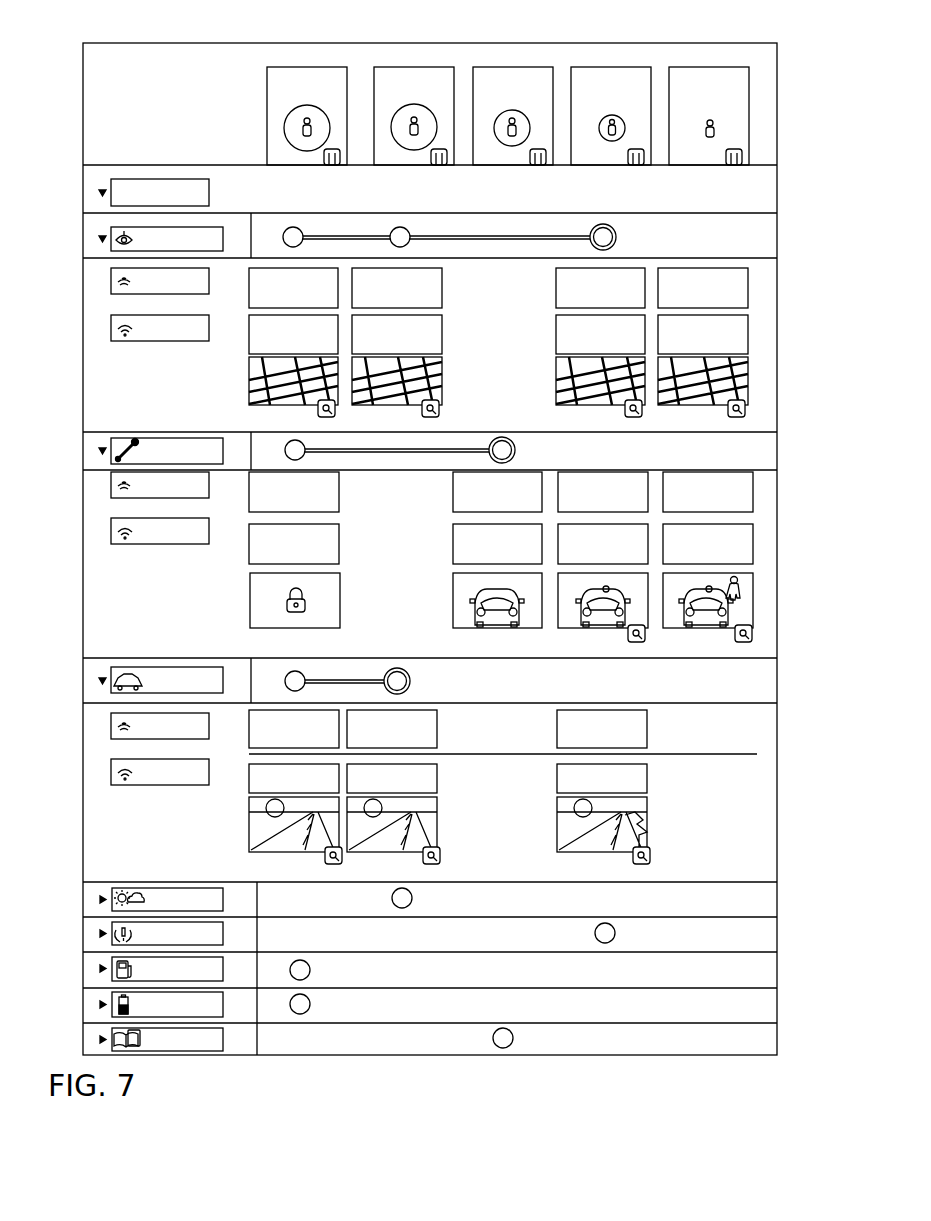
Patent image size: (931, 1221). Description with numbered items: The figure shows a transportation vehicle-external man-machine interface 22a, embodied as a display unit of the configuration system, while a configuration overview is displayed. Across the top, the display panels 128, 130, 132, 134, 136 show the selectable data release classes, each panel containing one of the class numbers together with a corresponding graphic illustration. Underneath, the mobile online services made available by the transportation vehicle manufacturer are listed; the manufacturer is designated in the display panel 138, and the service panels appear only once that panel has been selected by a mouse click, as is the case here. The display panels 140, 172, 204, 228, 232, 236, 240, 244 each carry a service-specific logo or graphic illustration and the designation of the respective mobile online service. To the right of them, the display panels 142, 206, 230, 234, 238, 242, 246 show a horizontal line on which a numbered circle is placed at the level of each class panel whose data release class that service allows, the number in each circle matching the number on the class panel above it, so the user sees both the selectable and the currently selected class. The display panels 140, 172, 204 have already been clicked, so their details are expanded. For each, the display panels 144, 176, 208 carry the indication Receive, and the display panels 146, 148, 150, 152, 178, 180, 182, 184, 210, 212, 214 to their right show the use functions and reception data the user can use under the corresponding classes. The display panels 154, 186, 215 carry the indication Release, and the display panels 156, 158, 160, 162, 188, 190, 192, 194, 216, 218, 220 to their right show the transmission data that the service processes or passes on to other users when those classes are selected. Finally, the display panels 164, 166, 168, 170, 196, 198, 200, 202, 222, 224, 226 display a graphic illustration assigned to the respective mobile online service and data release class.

The transportation vehicle-external man-machine interface 22a is at (777, 789).
The display panel 128 is at (308, 68).
The display panel 130 is at (414, 68).
The display panel 132 is at (510, 68).
The display panel 134 is at (611, 68).
The display panel 136 is at (710, 68).
The display panel 138 is at (154, 192).
The display panel 140 is at (161, 239).
The display panel 142 is at (757, 237).
The display panel 144 is at (160, 281).
The display panel 146 is at (293, 288).
The display panel 148 is at (397, 288).
The display panel 150 is at (600, 288).
The display panel 152 is at (703, 288).
The display panel 154 is at (160, 328).
The display panel 156 is at (293, 334).
The display panel 158 is at (397, 334).
The display panel 160 is at (600, 334).
The display panel 162 is at (703, 334).
The display panel 164 is at (282, 405).
The display panel 166 is at (385, 405).
The display panel 168 is at (590, 405).
The display panel 170 is at (693, 405).
The display panel 172 is at (307, 450).
The display panel 176 is at (160, 485).
The display panel 178 is at (294, 492).
The display panel 180 is at (497, 492).
The display panel 182 is at (603, 492).
The display panel 184 is at (708, 492).
The display panel 186 is at (160, 531).
The display panel 188 is at (294, 544).
The display panel 190 is at (497, 544).
The display panel 192 is at (603, 544).
The display panel 194 is at (708, 544).
The display panel 196 is at (251, 601).
The display panel 198 is at (454, 601).
The display panel 200 is at (603, 627).
The display panel 202 is at (707, 627).
The display panel 204 is at (161, 680).
The display panel 206 is at (757, 680).
The display panel 208 is at (160, 726).
The display panel 210 is at (294, 729).
The display panel 212 is at (392, 729).
The display panel 214 is at (602, 729).
The display panel 215 is at (160, 772).
The display panel 216 is at (294, 778).
The display panel 218 is at (392, 778).
The display panel 220 is at (602, 778).
The display panel 222 is at (313, 850).
The display panel 224 is at (411, 850).
The display panel 226 is at (621, 850).
The display panel 228 is at (161, 900).
The display panel 230 is at (757, 900).
The display panel 232 is at (161, 934).
The display panel 234 is at (757, 934).
The display panel 236 is at (161, 969).
The display panel 238 is at (757, 970).
The display panel 240 is at (161, 1004).
The display panel 242 is at (757, 1005).
The display panel 244 is at (161, 1040).
The display panel 246 is at (757, 1042).